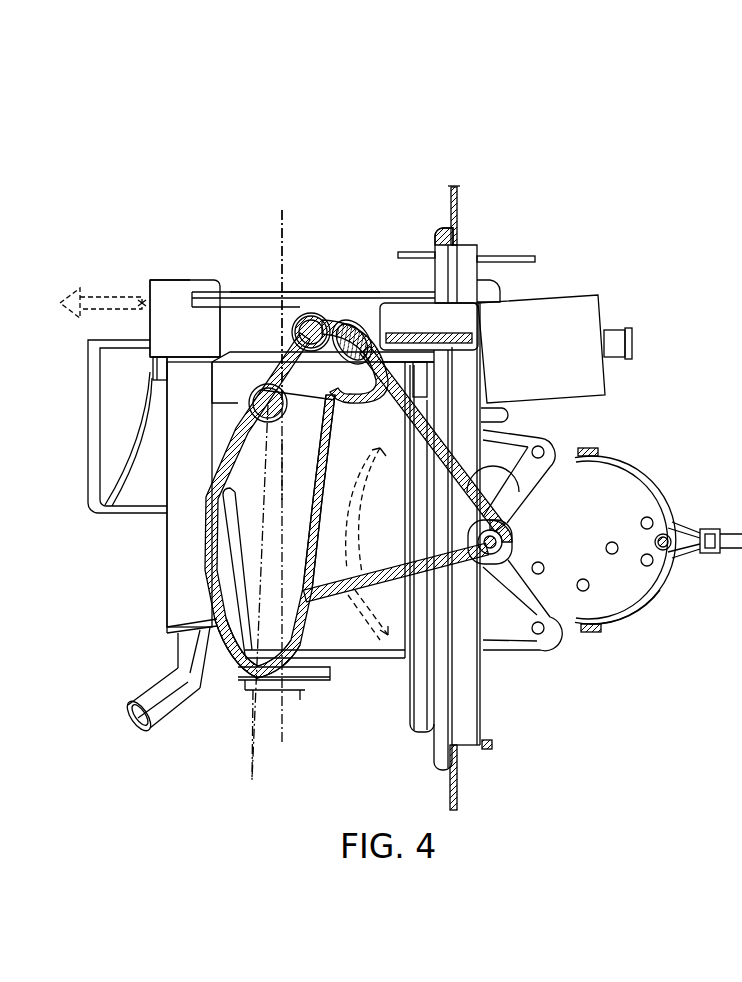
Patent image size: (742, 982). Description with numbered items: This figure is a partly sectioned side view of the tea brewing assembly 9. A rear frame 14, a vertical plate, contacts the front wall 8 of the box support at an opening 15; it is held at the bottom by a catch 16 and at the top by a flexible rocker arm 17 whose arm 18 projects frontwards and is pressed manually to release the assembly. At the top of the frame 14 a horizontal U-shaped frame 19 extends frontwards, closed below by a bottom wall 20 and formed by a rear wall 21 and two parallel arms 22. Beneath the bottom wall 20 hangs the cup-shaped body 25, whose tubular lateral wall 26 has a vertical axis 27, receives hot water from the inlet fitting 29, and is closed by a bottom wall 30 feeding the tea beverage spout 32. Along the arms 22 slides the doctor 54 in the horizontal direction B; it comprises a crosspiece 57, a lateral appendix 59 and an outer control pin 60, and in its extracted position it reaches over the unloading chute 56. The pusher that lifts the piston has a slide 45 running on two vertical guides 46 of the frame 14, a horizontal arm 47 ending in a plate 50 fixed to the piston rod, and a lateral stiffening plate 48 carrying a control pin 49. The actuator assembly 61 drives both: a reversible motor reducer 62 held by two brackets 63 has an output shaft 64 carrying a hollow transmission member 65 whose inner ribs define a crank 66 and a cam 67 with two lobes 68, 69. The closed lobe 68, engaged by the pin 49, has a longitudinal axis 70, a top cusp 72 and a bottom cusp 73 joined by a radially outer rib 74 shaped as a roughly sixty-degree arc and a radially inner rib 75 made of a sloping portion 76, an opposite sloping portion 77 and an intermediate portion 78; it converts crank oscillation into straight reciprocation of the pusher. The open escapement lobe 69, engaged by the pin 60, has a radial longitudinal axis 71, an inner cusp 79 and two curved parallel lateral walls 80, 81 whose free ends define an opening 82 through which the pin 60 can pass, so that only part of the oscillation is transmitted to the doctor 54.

The brewing assembly 9 is at (341, 222).
The vertical axis 27 is at (282, 228).
The bottom cusp 73 is at (264, 650).
The longitudinal axis 70 is at (255, 715).
The top cusp 72 is at (284, 470).
The front wall 8 is at (457, 225).
The catch 16 is at (488, 748).
The opening 15 is at (440, 266).
The arm 18 is at (406, 253).
The flexible rocker arm 17 is at (512, 256).
The rear wall 21 is at (480, 308).
The hot-water inlet fitting 29 is at (562, 320).
The rear frame 14 is at (493, 706).
The vertical guides 46 is at (424, 668).
The lateral stiffening plate 48 is at (368, 640).
The bottom wall 20 is at (427, 388).
The slide 45 is at (500, 407).
The longitudinal axis 71 is at (450, 340).
The lateral wall 81 is at (392, 334).
The lateral wall 80 is at (252, 359).
The arms 22 is at (328, 305).
The U-shaped frame 19 is at (261, 280).
The doctor 54 is at (178, 268).
The crosspiece 57 is at (172, 300).
The lateral appendix 59 is at (201, 325).
The horizontal direction B is at (115, 300).
The unloading chute 56 is at (96, 471).
The cam 67 is at (184, 535).
The lateral wall 26 is at (185, 576).
The cup-shaped body 25 is at (157, 604).
The bottom wall 30 is at (195, 642).
The tea beverage spout 32 is at (170, 716).
The radially outer rib 74 is at (206, 500).
The radially inner rib 75 is at (340, 530).
The closed lobe 68 is at (227, 677).
The sloping portion 77 is at (302, 643).
The hollow transmission member 65 is at (396, 601).
The intermediate portion 78 is at (330, 480).
The outer control roller or pin 60 is at (302, 321).
The opening 82 is at (297, 334).
The control roller or pin 49 is at (262, 421).
The inner cusp 79 is at (352, 333).
The open or escapement lobe 69 is at (367, 317).
The sloping portion 76 is at (322, 414).
The output shaft 64 is at (505, 545).
The crank 66 is at (508, 497).
The brackets 63 is at (533, 445).
The reversible motor reducer 62 is at (628, 484).
The actuator assembly 61 is at (630, 640).
The horizontal arm 47 is at (335, 660).
The plate 50 is at (306, 692).